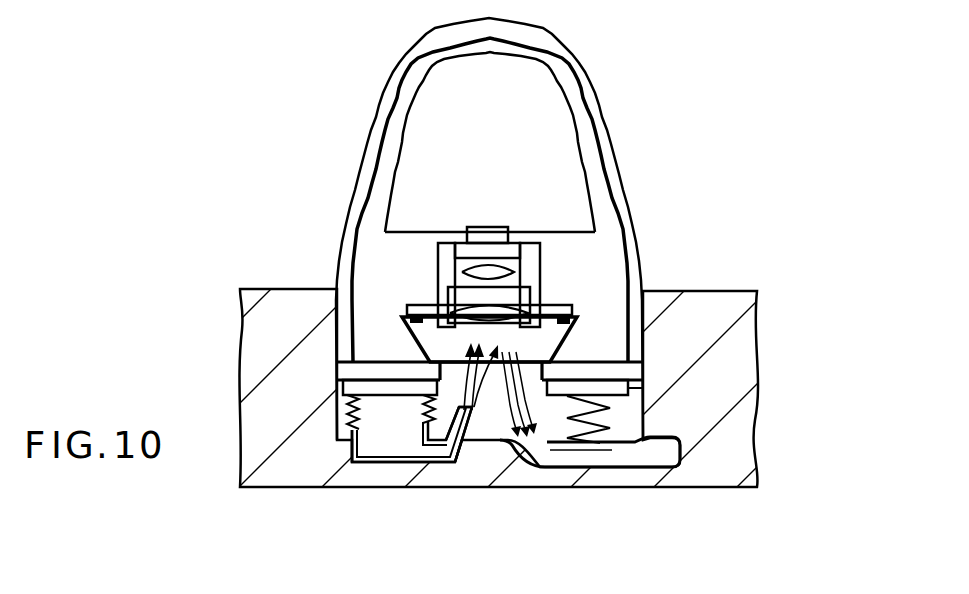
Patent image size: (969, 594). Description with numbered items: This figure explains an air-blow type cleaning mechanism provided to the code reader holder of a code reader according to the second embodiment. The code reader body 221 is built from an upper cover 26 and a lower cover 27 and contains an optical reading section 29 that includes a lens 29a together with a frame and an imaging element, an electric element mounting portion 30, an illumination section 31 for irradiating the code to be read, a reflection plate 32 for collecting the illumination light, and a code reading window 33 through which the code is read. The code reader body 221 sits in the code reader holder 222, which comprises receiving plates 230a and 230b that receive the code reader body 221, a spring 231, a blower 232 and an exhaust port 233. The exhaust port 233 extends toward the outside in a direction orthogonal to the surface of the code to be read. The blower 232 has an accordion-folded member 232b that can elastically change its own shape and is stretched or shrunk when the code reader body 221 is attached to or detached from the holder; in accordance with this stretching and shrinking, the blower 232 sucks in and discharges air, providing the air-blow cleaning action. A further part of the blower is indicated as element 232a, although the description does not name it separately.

The code reader body 221 is at (578, 63).
The electric element mounting portion 30 is at (557, 118).
The upper cover 26 is at (626, 228).
The optical reading section 29 is at (548, 237).
The illumination section 31 is at (558, 305).
The lens 29a is at (462, 325).
The reflection plate 32 is at (562, 346).
The lower cover 27 is at (335, 364).
The code reading window 33 is at (487, 381).
The receiving plate 230a is at (341, 390).
The receiving plate 230b is at (628, 388).
The spring 231 is at (608, 423).
The blower 232 is at (388, 464).
The inclined reflector arm 232a is at (455, 464).
The accordion-folded member 232b is at (351, 448).
The code reader holder 222 is at (527, 478).
The exhaust port 233 is at (548, 458).